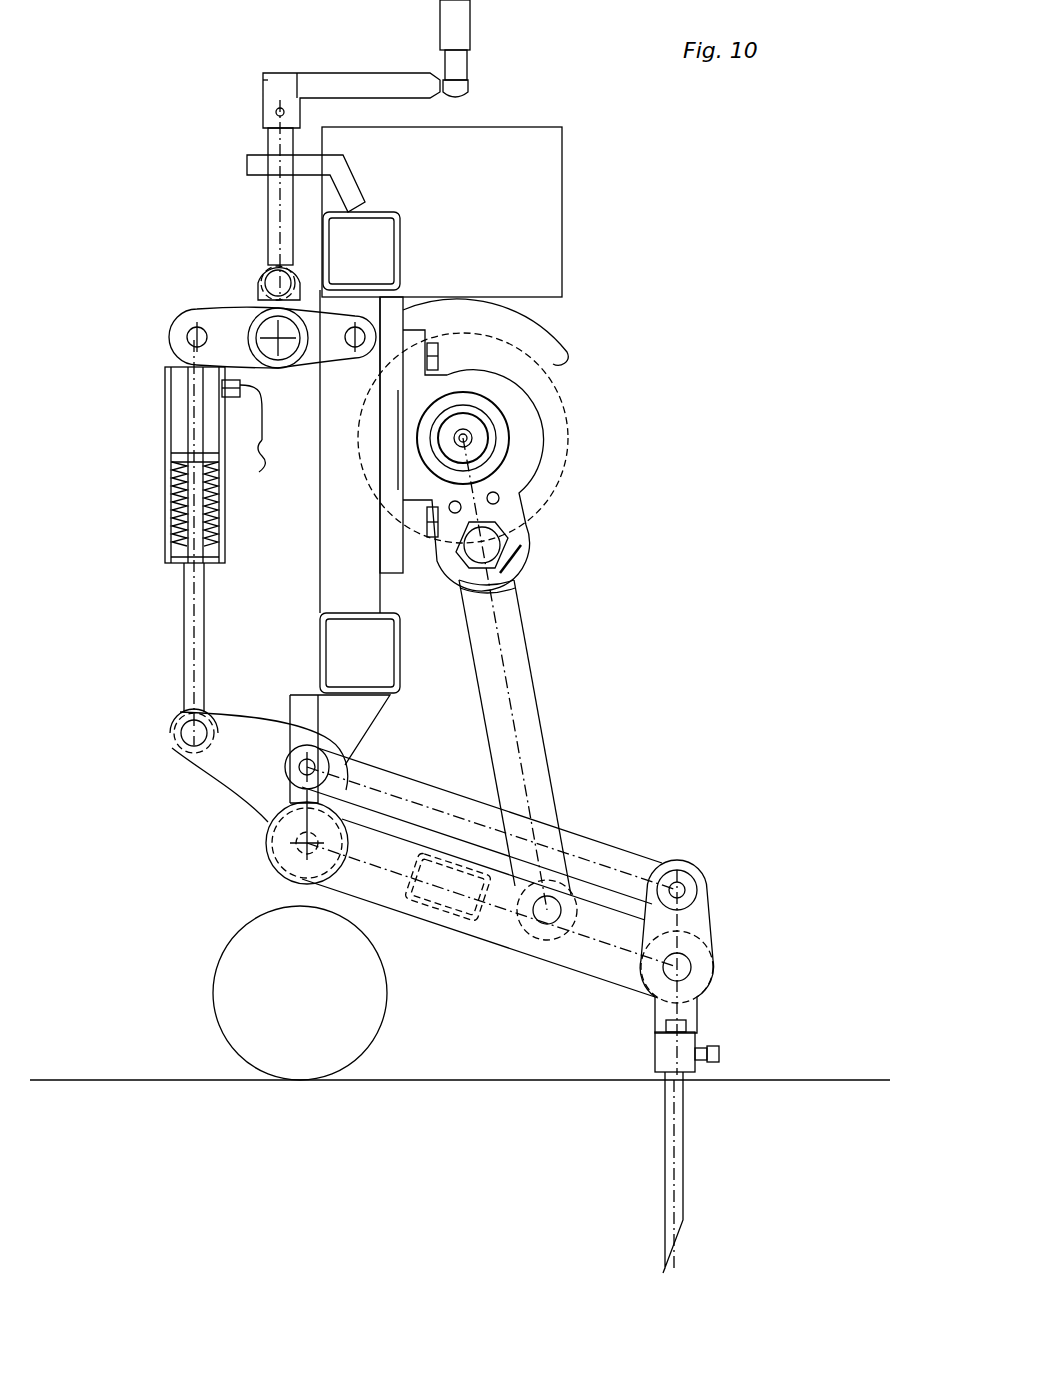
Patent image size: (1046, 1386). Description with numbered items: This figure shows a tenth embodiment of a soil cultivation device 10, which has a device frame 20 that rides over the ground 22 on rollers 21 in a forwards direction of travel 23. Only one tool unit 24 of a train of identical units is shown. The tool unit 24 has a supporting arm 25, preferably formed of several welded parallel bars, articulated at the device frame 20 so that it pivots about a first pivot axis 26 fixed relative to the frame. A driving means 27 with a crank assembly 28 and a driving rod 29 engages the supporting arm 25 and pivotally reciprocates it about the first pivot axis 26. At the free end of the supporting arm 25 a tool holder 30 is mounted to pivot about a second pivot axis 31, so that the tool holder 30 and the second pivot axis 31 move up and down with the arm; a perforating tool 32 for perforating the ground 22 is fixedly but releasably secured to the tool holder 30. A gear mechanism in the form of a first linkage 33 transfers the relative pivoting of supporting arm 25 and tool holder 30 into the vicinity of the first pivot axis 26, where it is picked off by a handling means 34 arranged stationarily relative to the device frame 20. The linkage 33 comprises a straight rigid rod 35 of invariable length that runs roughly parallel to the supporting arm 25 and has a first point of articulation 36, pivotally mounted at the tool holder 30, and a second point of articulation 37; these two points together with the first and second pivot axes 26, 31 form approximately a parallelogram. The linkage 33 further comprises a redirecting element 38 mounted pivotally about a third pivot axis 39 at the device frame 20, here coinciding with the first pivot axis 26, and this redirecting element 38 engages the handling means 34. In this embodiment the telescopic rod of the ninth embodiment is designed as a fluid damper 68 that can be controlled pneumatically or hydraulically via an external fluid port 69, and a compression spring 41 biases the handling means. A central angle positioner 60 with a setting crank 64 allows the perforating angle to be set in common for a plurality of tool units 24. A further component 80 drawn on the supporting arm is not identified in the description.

The soil cultivation device 10 is at (703, 420).
The device frame 20 is at (321, 596).
The rollers 21 is at (373, 1007).
The ground 22 is at (443, 1093).
The forwards direction of travel 23 is at (748, 610).
The tool unit 24 is at (711, 923).
The supporting arm 25 is at (489, 920).
The first pivot axis 26 is at (250, 801).
The driving means 27 is at (588, 502).
The crank assembly 28 is at (552, 364).
The driving rod 29 is at (523, 653).
The tool holder 30 is at (706, 926).
The second pivot axis 31 is at (680, 970).
The perforating tool 32 is at (685, 1143).
The first linkage 33 is at (497, 881).
The handling means 34 is at (148, 636).
The rigid rod 35 is at (447, 793).
The first point of articulation 36 is at (688, 888).
The second point of articulation 37 is at (300, 765).
The redirecting element 38 is at (227, 770).
The third pivot axis 39 is at (298, 847).
The compression spring 41 is at (178, 508).
The central angle positioner 60 is at (222, 210).
The setting crank 64 is at (357, 72).
The fluid damper 68 is at (157, 495).
The external fluid port 69 is at (254, 444).
The mounting plate 80 is at (490, 934).